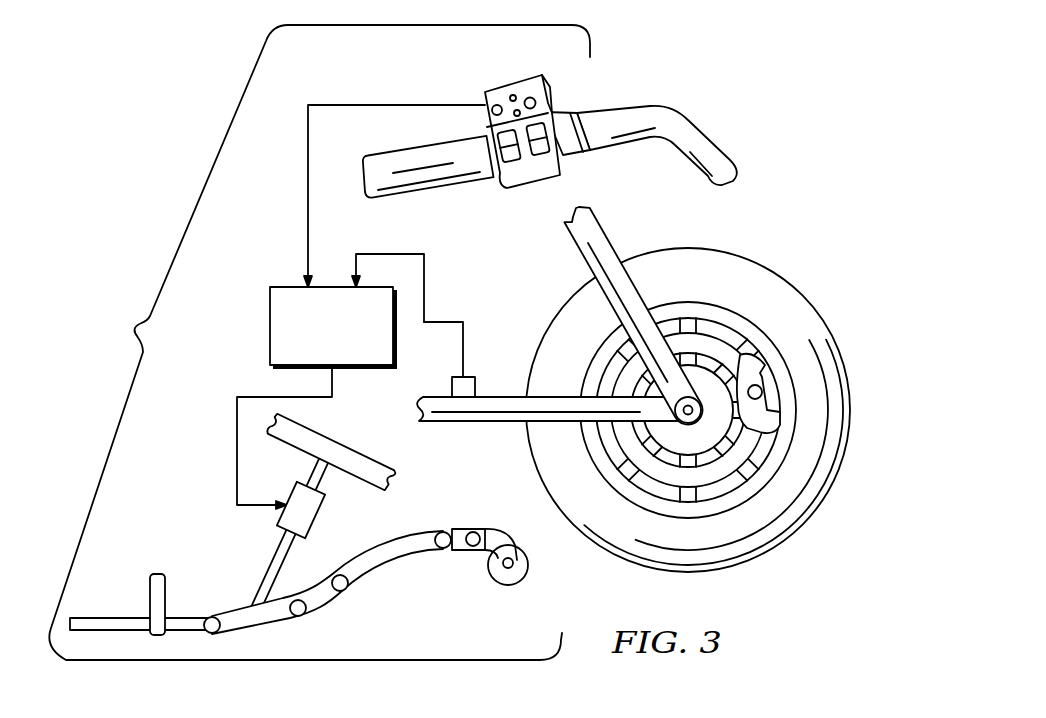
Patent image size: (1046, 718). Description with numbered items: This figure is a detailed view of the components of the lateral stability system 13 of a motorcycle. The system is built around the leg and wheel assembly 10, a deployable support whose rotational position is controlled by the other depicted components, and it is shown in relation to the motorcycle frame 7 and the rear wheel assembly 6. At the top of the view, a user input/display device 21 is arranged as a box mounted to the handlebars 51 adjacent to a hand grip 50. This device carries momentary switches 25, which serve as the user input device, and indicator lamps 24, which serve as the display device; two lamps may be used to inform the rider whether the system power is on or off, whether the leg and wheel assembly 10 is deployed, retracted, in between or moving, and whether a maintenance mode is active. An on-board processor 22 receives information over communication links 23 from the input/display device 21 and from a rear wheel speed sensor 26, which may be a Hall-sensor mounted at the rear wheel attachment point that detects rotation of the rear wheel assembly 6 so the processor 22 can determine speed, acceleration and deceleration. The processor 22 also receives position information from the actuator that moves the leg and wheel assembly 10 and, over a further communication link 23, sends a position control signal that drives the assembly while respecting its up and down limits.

The rear wheel assembly 6 is at (781, 569).
The frame 7 is at (317, 430).
The leg and wheel assembly 10 is at (456, 575).
The lateral stability system 13 is at (133, 328).
The user input/display device 21 is at (557, 91).
The on-board processor 22 is at (270, 322).
The communication links 23 is at (308, 205).
The indicator lamps 24 is at (515, 110).
The momentary switches 25 is at (530, 97).
The rear wheel speed sensor 26 is at (468, 377).
The hand grip 50 is at (435, 187).
The handlebars 51 is at (683, 107).